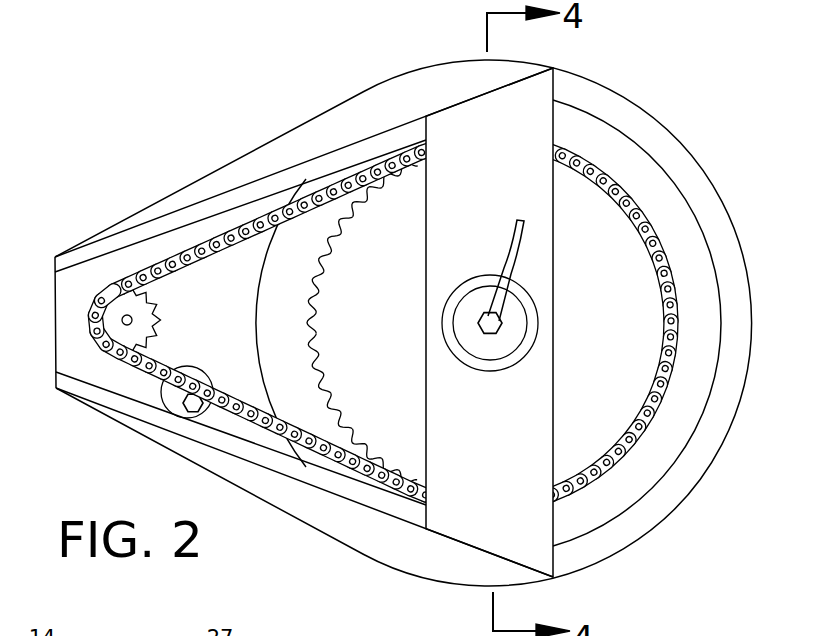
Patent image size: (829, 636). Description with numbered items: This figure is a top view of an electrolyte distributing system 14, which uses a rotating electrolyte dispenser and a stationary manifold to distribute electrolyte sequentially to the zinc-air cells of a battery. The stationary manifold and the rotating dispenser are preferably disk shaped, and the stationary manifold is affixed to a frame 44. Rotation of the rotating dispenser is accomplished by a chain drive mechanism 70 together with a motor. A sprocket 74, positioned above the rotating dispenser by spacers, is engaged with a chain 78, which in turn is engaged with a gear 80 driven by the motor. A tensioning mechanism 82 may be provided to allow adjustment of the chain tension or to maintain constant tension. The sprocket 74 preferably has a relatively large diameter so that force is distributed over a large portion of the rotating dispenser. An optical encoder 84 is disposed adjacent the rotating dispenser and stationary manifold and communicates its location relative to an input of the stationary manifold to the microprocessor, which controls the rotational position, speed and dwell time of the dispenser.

The electrolyte distributing system 14 is at (692, 100).
The frame 44 is at (718, 229).
The chain drive mechanism 70 is at (88, 291).
The sprocket 74 is at (617, 412).
The chain 78 is at (216, 240).
The gear 80 is at (143, 323).
The tensioning mechanism 82 is at (175, 390).
The optical encoder 84 is at (510, 335).